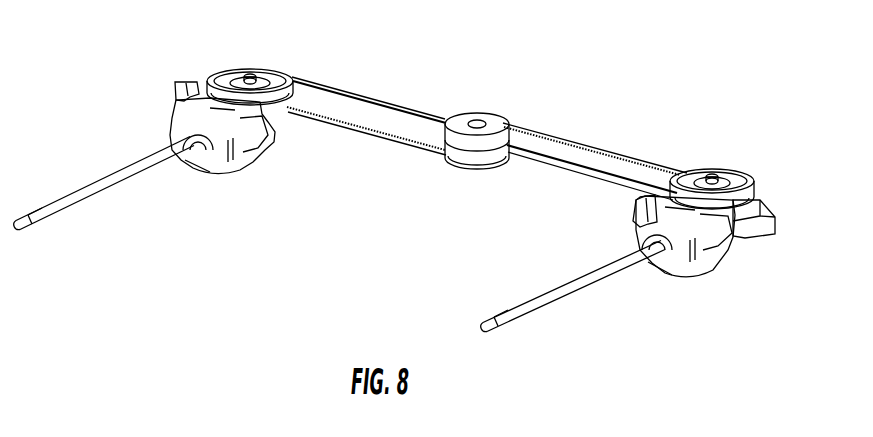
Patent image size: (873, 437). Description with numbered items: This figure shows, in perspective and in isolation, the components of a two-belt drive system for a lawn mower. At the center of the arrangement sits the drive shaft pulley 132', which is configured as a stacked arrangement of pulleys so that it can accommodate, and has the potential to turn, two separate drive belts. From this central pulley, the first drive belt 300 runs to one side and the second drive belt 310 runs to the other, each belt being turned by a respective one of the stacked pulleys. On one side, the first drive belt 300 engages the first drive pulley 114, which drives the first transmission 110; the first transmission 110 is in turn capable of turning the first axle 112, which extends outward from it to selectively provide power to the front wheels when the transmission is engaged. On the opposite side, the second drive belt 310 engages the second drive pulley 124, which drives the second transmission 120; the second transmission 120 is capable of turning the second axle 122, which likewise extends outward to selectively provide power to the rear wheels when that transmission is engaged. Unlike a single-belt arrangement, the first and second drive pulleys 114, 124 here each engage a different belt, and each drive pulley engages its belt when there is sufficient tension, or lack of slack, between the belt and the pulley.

The first transmission 110 is at (238, 155).
The first axle 112 is at (110, 183).
The first drive pulley 114 is at (284, 78).
The second transmission 120 is at (640, 226).
The second axle 122 is at (520, 300).
The second drive pulley 124 is at (735, 172).
The drive shaft pulley 132' is at (463, 118).
The first drive belt 300 is at (351, 128).
The second drive belt 310 is at (588, 140).